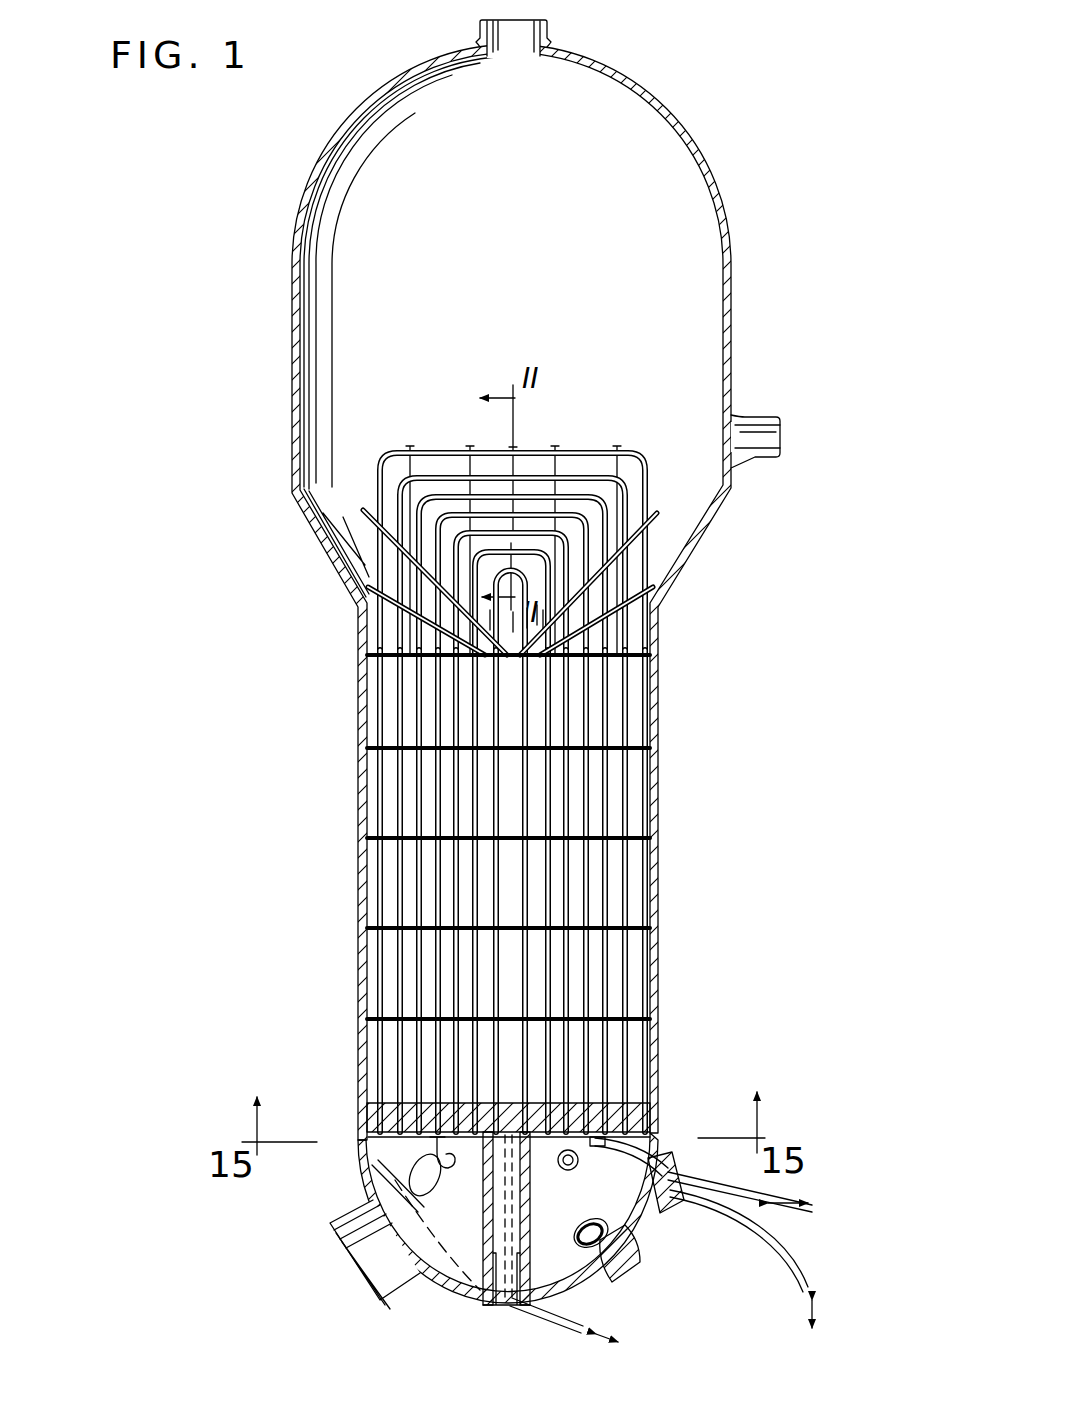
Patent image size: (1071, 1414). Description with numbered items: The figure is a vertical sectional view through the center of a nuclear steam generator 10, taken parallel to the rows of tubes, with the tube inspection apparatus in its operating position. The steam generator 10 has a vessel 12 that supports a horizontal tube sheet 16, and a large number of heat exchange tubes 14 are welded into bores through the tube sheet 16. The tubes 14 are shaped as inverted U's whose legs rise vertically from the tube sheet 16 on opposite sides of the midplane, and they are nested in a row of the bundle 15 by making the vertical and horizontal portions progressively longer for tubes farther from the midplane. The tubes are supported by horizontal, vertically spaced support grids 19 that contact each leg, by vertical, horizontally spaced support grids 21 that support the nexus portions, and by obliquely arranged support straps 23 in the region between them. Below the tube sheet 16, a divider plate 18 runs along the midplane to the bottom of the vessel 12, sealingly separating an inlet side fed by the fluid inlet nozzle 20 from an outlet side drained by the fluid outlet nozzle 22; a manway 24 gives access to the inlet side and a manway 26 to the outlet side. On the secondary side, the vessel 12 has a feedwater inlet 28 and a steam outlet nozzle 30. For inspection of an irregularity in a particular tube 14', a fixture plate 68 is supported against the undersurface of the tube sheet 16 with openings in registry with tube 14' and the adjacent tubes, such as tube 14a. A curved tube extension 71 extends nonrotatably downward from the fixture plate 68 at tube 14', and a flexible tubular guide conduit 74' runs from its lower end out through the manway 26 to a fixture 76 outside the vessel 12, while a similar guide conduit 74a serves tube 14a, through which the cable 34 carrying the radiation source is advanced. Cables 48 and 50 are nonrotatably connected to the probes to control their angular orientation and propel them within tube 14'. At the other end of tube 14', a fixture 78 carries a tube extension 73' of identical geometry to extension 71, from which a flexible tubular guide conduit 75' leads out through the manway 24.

The nuclear steam generator 10 is at (762, 117).
The vessel 12 is at (726, 166).
The heat exchange tubes 14 is at (486, 527).
The tube 14' is at (550, 792).
The tube 14a is at (608, 1000).
The bundle 15 is at (432, 438).
The tube sheet 16 is at (380, 1102).
The divider plate 18 is at (497, 1202).
The support grids 19 is at (633, 745).
The fluid inlet nozzle 20 is at (330, 1230).
The support grids 21 is at (538, 552).
The fluid outlet nozzle 22 is at (612, 1278).
The support straps 23 is at (652, 514).
The manway 24 is at (363, 1190).
The manway 26 is at (668, 1160).
The feedwater inlet 28 is at (766, 414).
The steam outlet nozzle 30 is at (549, 40).
The cable 34 is at (762, 1195).
The cable 48 is at (567, 1328).
The cable 50 is at (813, 1283).
The fixture plate 68 is at (655, 1140).
The curved tube extension 71 is at (570, 1176).
The tube extension 73' is at (368, 1175).
The flexible tubular guide conduit 74a is at (680, 1172).
The flexible tubular guide conduit 74' is at (761, 1241).
The flexible tubular guide conduit 75' is at (514, 1322).
The fixture 76 is at (666, 1215).
The fixture 78 is at (358, 1150).